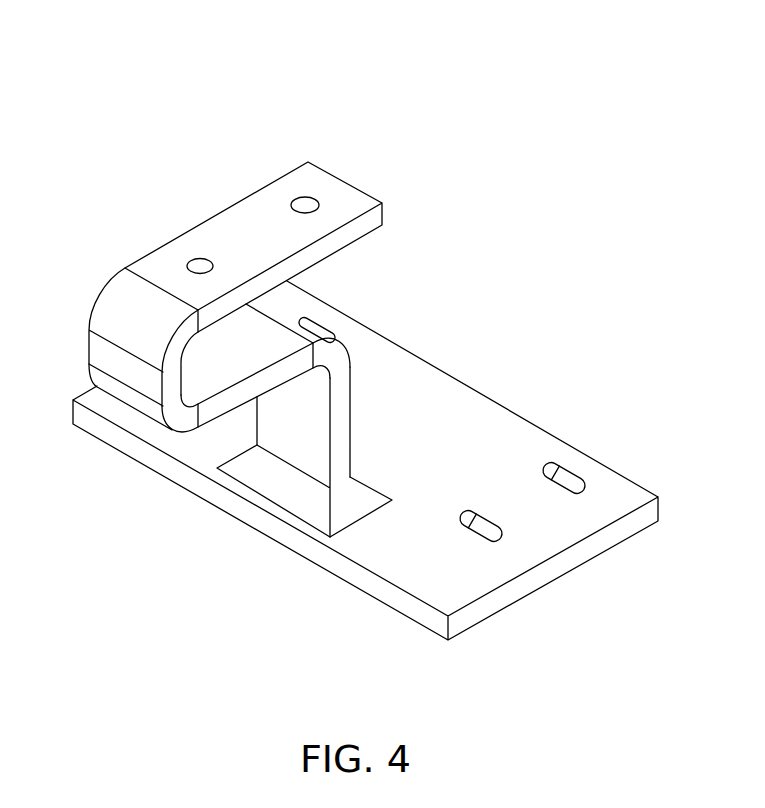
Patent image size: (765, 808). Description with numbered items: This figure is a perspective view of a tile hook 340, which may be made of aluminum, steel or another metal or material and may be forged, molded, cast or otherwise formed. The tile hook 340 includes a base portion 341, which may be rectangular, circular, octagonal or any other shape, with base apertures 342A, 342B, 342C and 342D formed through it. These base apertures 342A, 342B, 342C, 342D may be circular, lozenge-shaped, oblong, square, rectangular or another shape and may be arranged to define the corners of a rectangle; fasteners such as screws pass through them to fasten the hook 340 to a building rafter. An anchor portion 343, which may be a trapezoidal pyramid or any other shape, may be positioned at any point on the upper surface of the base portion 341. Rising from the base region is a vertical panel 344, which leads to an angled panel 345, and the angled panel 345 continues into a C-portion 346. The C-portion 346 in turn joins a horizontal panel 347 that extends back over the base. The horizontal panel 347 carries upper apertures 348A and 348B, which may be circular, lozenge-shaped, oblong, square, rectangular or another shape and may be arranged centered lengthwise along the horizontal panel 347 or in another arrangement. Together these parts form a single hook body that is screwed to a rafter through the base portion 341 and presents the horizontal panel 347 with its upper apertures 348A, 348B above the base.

The tile hook 340 is at (322, 70).
The base portion 341 is at (556, 570).
The base aperture 342A is at (470, 513).
The base aperture 342B is at (560, 460).
The base aperture 342C is at (330, 330).
The base aperture 342D is at (303, 305).
The anchor portion 343 is at (345, 512).
The vertical panel 344 is at (340, 445).
The angled panel 345 is at (237, 400).
The C-portion 346 is at (170, 393).
The horizontal panel 347 is at (372, 220).
The upper aperture 348A is at (200, 266).
The upper aperture 348B is at (304, 203).